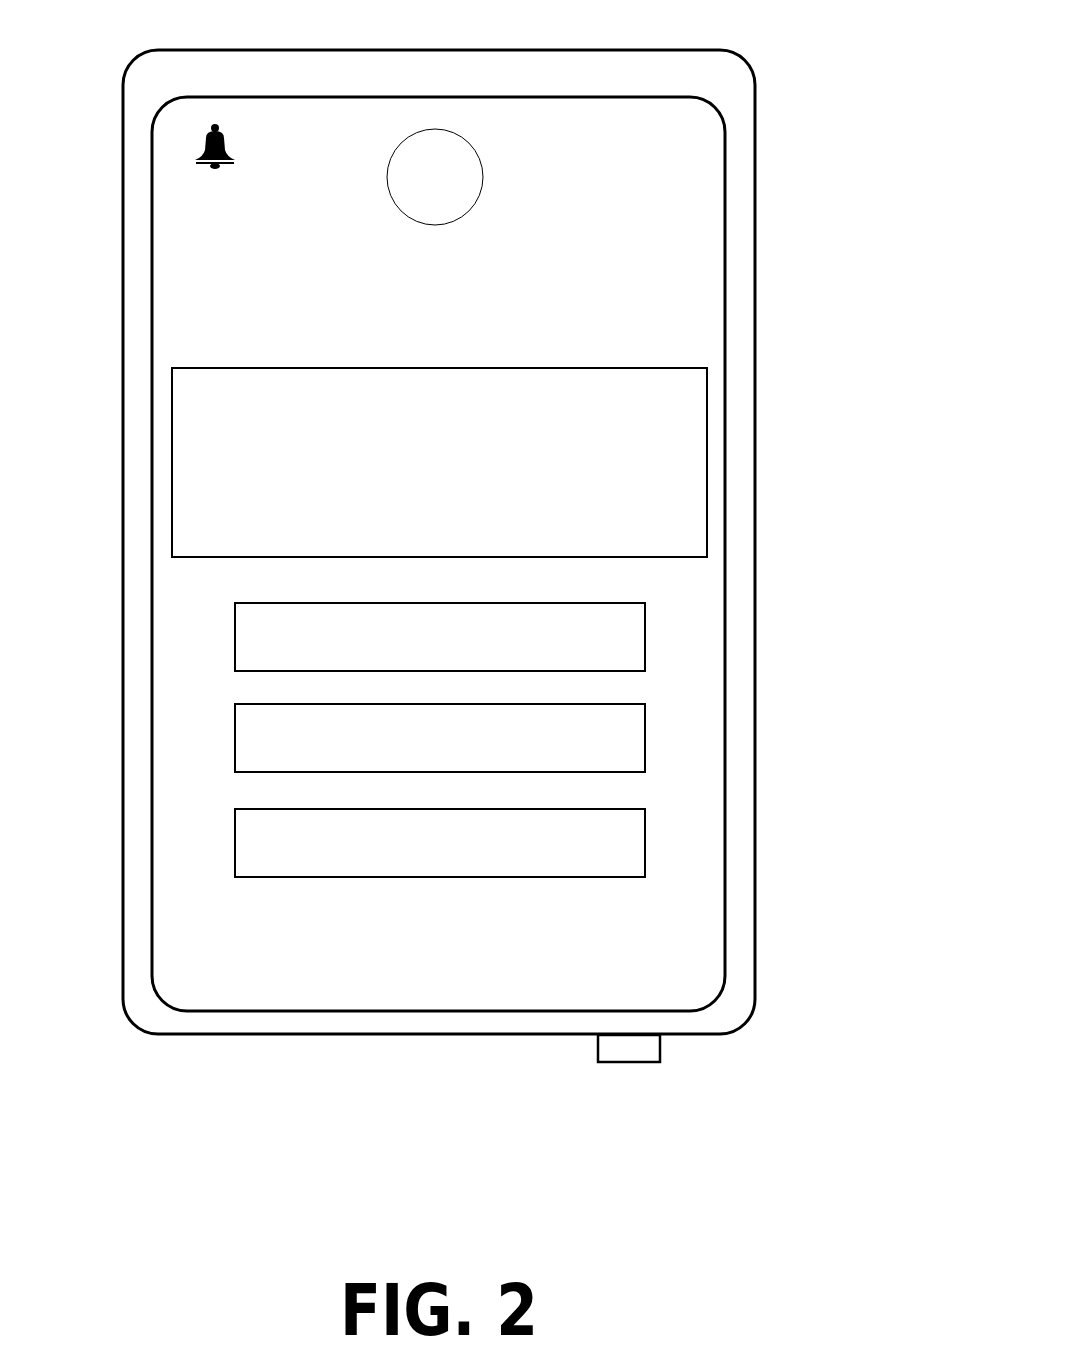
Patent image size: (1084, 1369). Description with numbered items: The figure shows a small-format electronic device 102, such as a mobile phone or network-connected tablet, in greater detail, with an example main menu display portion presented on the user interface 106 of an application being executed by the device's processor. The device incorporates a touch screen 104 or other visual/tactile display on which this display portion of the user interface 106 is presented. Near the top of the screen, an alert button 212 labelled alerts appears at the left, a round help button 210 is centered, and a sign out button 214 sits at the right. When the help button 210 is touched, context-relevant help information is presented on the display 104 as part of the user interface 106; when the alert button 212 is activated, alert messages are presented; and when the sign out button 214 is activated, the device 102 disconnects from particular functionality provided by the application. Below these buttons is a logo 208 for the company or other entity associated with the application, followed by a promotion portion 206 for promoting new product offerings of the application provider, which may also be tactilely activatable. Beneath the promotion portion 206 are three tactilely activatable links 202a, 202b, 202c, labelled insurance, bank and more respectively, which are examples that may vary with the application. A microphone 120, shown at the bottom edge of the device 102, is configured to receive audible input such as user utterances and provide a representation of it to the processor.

The small-format electronic device 102 is at (500, 517).
The touch screen 104 is at (512, 505).
The user interface 106 is at (668, 245).
The microphone 120 is at (635, 1063).
The tactilely activatable link 202a is at (550, 610).
The tactilely activatable link 202b is at (623, 698).
The tactilely activatable link 202c is at (430, 865).
The promotion portion 206 is at (690, 440).
The logo 208 is at (543, 293).
The help button 210 is at (457, 155).
The alert button 212 is at (237, 147).
The sign out button 214 is at (693, 165).